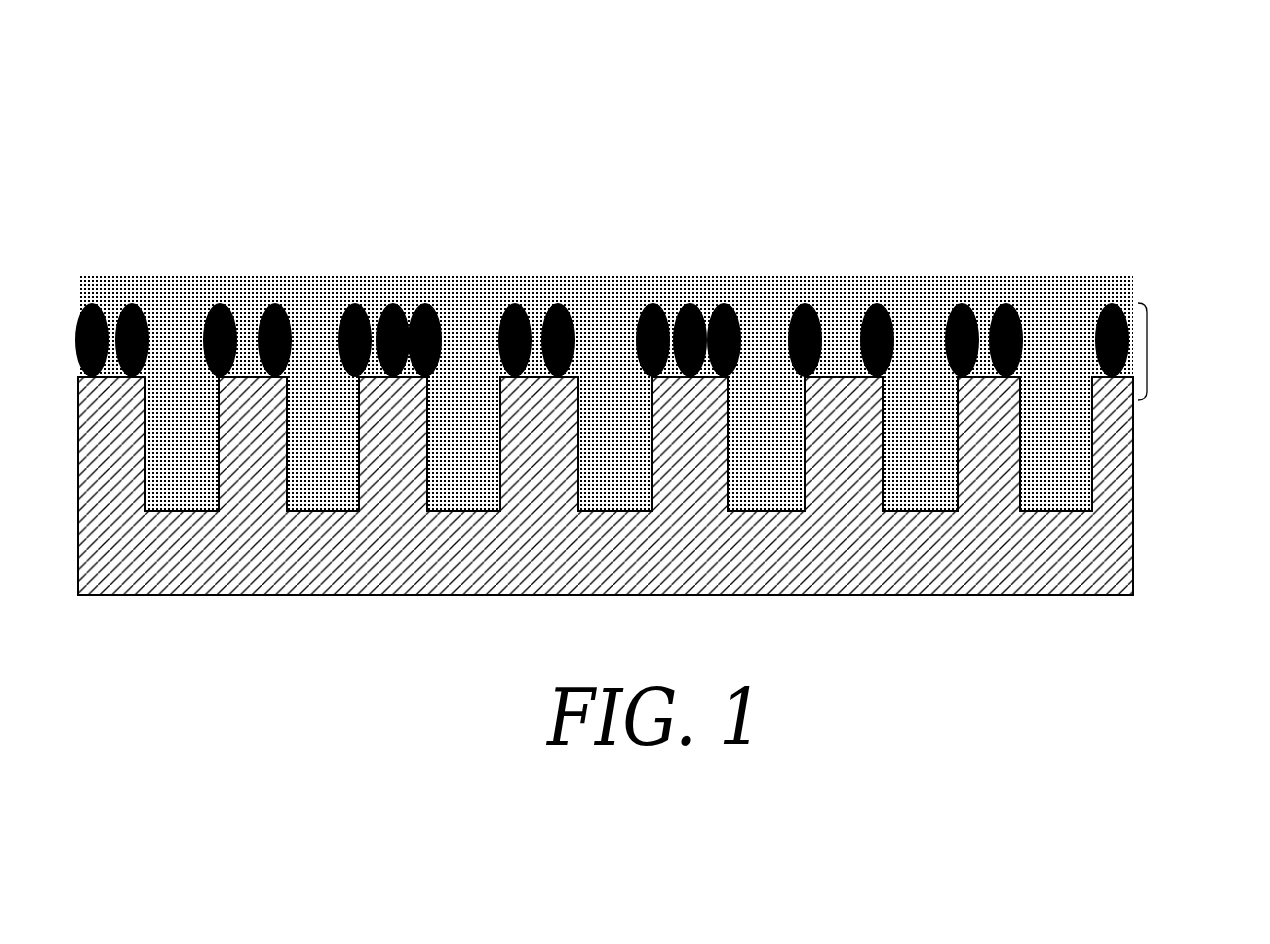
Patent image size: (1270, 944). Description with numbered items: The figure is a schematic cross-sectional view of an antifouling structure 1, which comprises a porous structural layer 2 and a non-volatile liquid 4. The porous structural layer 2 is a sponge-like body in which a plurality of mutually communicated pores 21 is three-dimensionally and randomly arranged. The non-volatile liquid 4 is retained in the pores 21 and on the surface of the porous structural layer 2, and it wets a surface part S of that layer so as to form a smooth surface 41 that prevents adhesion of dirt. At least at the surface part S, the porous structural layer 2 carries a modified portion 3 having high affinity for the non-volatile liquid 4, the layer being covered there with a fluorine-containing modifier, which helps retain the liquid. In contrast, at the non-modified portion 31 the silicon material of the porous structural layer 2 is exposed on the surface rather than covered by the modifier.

The antifouling structure 1 is at (91, 93).
The porous structural layer 2 is at (1030, 557).
The pores 21 is at (1055, 453).
The modified portion 3 is at (717, 308).
The non-modified portion 31 is at (242, 373).
The non-volatile liquid 4 is at (767, 330).
The smooth surface 41 is at (1137, 275).
The surface part S is at (1148, 350).